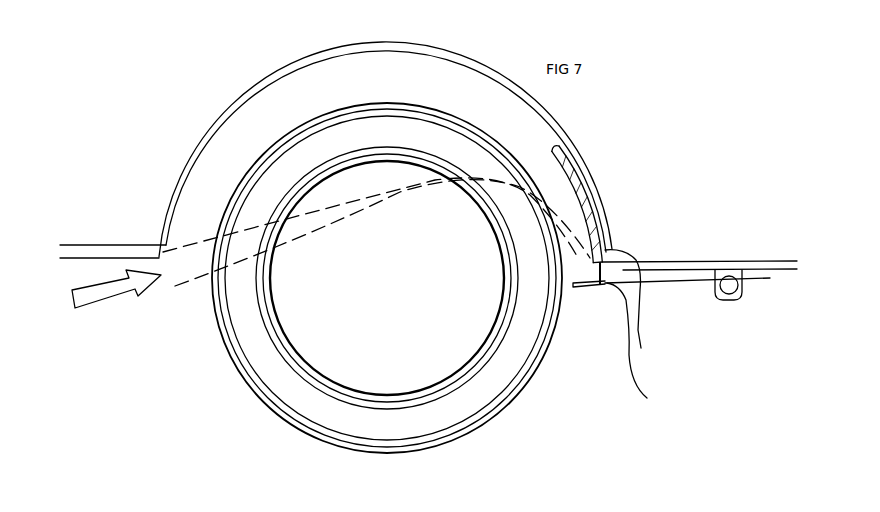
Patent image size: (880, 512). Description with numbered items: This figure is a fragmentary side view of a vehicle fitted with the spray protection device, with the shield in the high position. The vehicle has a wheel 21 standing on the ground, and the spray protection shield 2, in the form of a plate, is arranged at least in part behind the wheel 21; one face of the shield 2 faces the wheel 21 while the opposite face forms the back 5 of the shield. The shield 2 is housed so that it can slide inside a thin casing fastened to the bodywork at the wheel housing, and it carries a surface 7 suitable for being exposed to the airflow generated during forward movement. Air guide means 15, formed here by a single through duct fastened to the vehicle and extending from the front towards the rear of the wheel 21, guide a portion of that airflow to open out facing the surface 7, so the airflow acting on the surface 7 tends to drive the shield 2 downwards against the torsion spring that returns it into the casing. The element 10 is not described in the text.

The air guide means 15 is at (297, 202).
The wheel 21 is at (513, 395).
The surface 7 is at (588, 288).
The sill 10 is at (680, 279).
The spray protection shield 2 is at (631, 304).
The back of the shield 5 is at (633, 347).